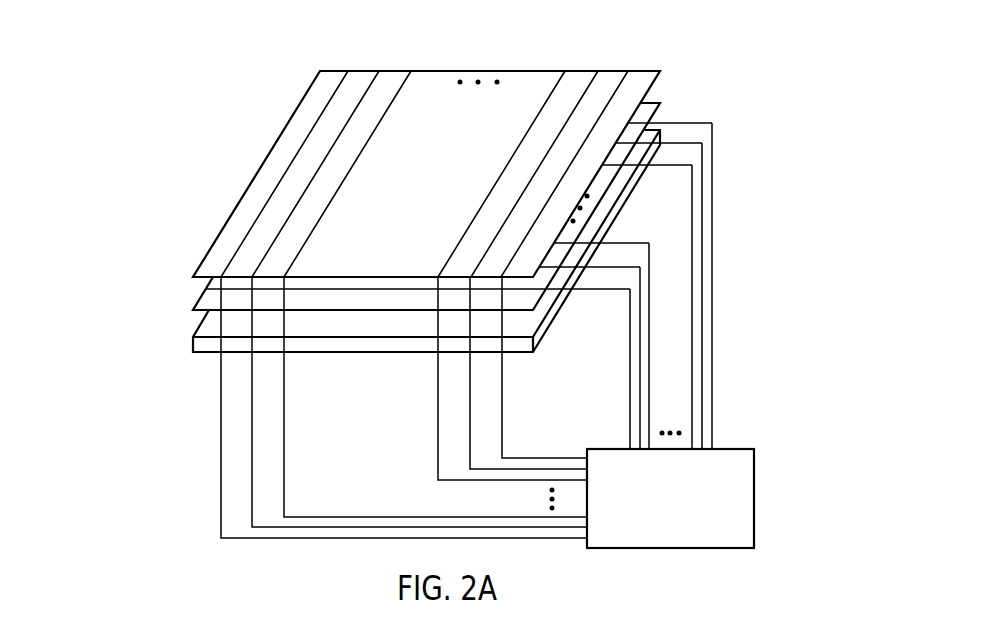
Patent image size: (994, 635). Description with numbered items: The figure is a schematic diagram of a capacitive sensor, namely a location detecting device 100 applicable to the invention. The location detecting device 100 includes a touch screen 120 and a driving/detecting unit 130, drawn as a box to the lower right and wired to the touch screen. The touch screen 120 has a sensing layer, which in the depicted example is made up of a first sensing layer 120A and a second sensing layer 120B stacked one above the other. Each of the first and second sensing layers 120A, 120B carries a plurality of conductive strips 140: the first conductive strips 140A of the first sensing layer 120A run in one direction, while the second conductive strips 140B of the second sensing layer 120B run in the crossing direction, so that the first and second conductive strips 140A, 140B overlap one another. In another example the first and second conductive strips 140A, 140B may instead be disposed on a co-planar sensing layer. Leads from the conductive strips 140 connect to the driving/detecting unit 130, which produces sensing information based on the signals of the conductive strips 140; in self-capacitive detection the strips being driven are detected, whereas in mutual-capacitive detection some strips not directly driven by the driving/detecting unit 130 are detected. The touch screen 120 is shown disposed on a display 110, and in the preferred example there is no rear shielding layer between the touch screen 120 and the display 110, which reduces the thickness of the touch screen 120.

The location detecting device 100 is at (261, 88).
The display 110 is at (210, 322).
The touch screen 120 is at (83, 230).
The first sensing layer 120A is at (212, 266).
The second sensing layer 120B is at (205, 300).
The driving/detecting unit 130 is at (686, 535).
The conductive strips 140 is at (775, 33).
The first conductive strips 140A is at (628, 70).
The second conductive strips 140B is at (643, 105).